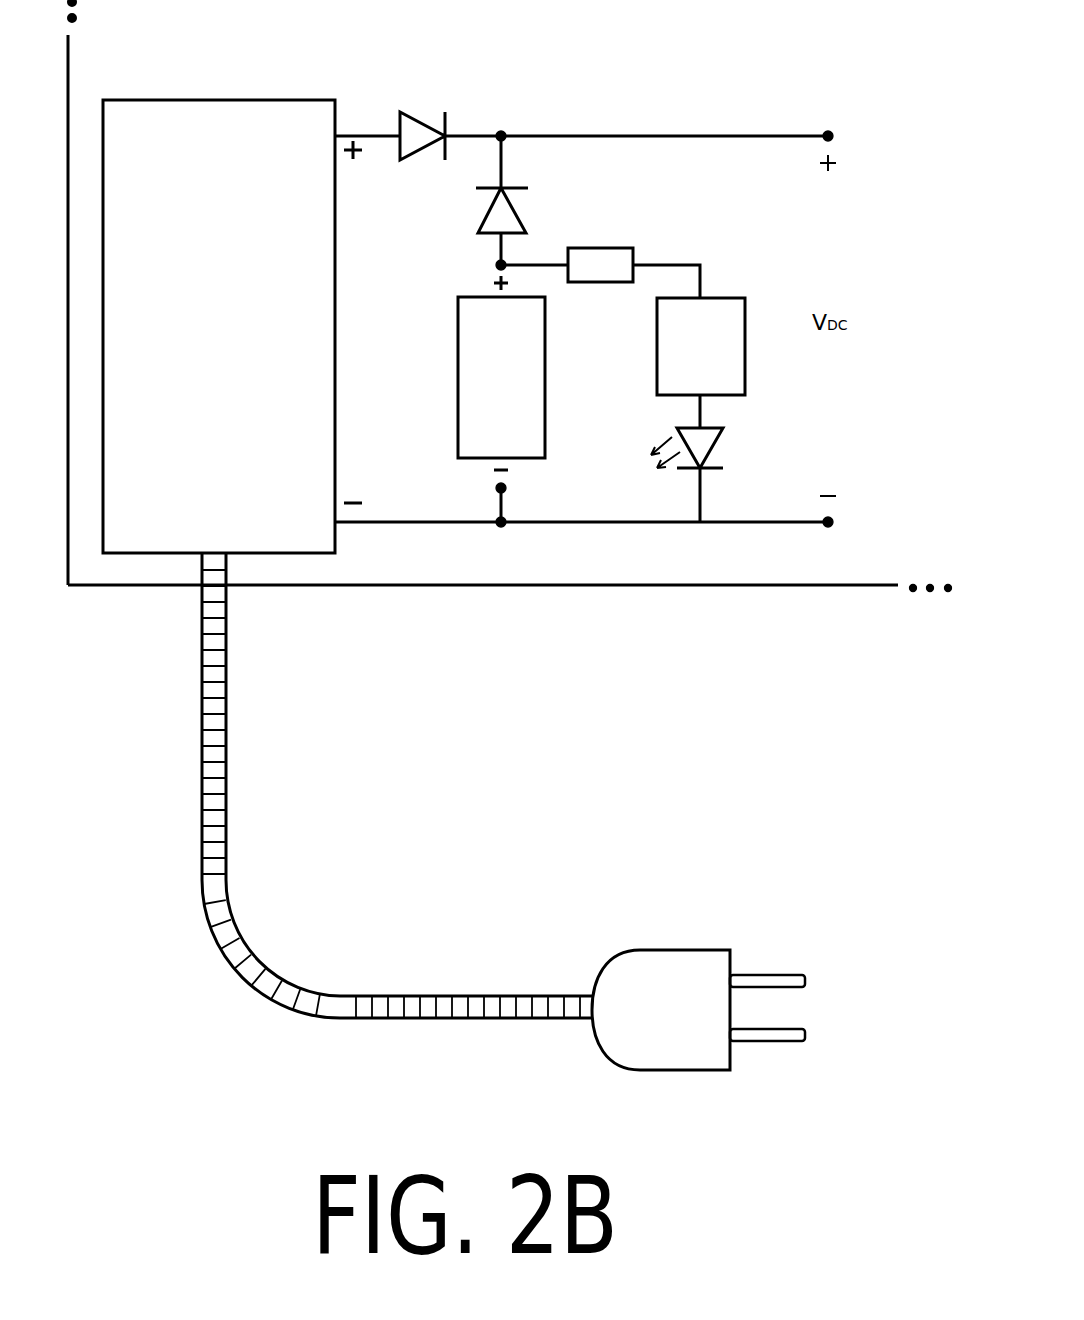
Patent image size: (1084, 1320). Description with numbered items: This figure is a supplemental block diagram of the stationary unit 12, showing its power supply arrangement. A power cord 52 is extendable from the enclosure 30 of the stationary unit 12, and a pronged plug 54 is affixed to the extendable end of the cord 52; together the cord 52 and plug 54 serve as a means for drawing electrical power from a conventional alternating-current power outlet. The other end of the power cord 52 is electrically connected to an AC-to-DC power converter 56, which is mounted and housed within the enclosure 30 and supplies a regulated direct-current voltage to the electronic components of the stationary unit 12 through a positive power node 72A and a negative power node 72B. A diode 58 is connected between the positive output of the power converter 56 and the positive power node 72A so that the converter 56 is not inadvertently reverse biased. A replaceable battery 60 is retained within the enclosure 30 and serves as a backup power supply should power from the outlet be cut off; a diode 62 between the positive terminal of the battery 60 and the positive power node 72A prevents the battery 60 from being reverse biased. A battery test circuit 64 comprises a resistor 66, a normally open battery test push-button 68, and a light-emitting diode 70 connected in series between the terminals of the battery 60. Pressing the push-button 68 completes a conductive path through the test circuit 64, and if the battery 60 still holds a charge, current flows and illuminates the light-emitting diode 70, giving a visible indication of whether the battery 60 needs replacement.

The stationary unit 12 is at (825, 683).
The enclosure 30 is at (418, 588).
The power cord 52 is at (200, 781).
The pronged plug 54 is at (685, 950).
The AC-to-DC power converter 56 is at (203, 100).
The diode 58 is at (425, 112).
The replaceable battery 60 is at (458, 364).
The diode 62 is at (490, 212).
The battery test circuit 64 is at (718, 261).
The resistor 66 is at (598, 248).
The battery test push-button 68 is at (657, 347).
The light-emitting diode 70 is at (715, 445).
The positive power node 72A is at (832, 132).
The negative power node 72B is at (833, 527).